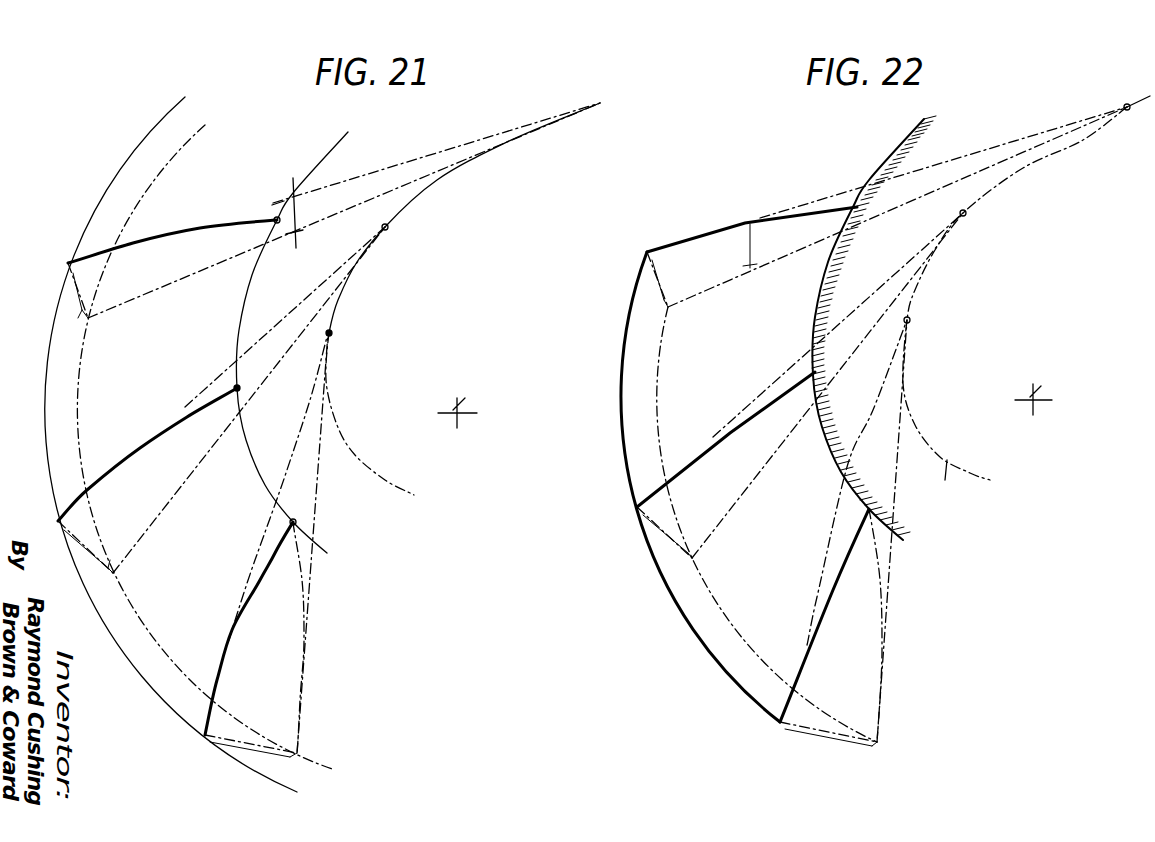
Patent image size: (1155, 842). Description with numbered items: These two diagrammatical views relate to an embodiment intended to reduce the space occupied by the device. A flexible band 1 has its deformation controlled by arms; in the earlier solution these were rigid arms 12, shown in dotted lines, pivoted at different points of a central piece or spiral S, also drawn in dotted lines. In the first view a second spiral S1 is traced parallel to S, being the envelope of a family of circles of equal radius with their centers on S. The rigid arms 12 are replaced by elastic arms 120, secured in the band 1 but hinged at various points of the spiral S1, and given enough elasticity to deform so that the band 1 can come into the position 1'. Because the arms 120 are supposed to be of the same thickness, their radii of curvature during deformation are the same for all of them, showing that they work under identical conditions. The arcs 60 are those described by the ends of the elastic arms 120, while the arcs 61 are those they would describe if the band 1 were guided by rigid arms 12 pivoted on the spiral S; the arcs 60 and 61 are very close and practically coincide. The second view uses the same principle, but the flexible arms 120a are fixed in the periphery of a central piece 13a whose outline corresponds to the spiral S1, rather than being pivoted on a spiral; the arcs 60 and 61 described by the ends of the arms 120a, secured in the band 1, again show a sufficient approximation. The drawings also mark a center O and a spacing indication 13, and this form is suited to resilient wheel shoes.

In FIG. 21, the flexible band 1 is at (163, 444).
In FIG. 22, the flexible band 1 is at (731, 497).
In FIG. 21, the deformed position of band 1' is at (206, 447).
In FIG. 21, the rigid arms 12 is at (373, 172).
In FIG. 21, the spacing indicator 13 is at (287, 202).
In FIG. 22, the central piece 13a is at (835, 303).
In FIG. 21, the arcs described by ends of elastic arms 60 is at (78, 313).
In FIG. 22, the arcs described by ends of elastic arms 60 is at (652, 273).
In FIG. 21, the arcs described by rigid arms 61 is at (78, 290).
In FIG. 22, the arcs described by rigid arms 61 is at (662, 280).
In FIG. 21, the elastic arms 120 is at (200, 232).
In FIG. 22, the flexible arms fixed in central piece 120a is at (727, 460).
In FIG. 21, the spiral S1 is at (338, 137).
In FIG. 22, the spiral S1 is at (874, 161).
In FIG. 21, the spiral S is at (443, 183).
In FIG. 22, the spiral S is at (1020, 173).
In FIG. 21, the center of rotation O is at (465, 402).
In FIG. 22, the center of rotation O is at (1038, 390).